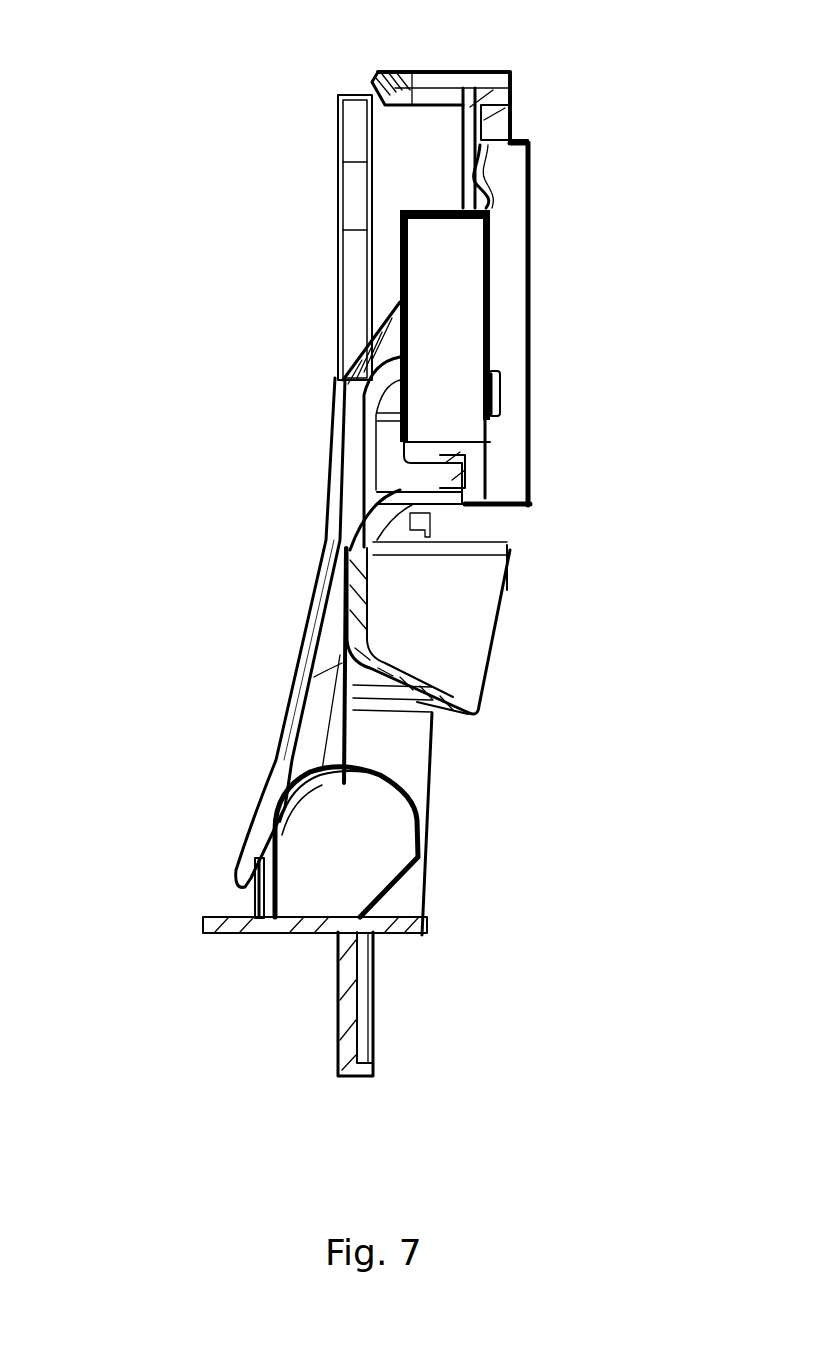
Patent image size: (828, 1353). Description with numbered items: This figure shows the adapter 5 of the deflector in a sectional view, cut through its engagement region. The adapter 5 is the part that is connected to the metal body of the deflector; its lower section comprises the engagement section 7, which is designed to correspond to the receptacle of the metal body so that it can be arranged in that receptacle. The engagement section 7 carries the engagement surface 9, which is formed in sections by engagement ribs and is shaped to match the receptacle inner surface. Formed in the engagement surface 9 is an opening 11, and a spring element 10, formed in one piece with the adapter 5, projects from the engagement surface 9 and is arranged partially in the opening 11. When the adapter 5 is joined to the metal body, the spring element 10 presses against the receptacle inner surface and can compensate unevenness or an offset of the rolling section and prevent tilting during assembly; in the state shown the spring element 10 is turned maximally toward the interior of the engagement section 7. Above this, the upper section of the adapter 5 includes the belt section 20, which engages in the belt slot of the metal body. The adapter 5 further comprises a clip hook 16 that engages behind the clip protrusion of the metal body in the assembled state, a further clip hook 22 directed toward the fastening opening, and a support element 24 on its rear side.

The adapter 5 is at (172, 117).
The engagement section 7 is at (318, 890).
The engagement surface 9 is at (254, 892).
The spring element 10 is at (237, 864).
The opening 11 is at (271, 862).
The clip hook 16 is at (427, 74).
The belt section 20 is at (352, 623).
The further clip hook 22 is at (458, 452).
The support element 24 is at (505, 393).